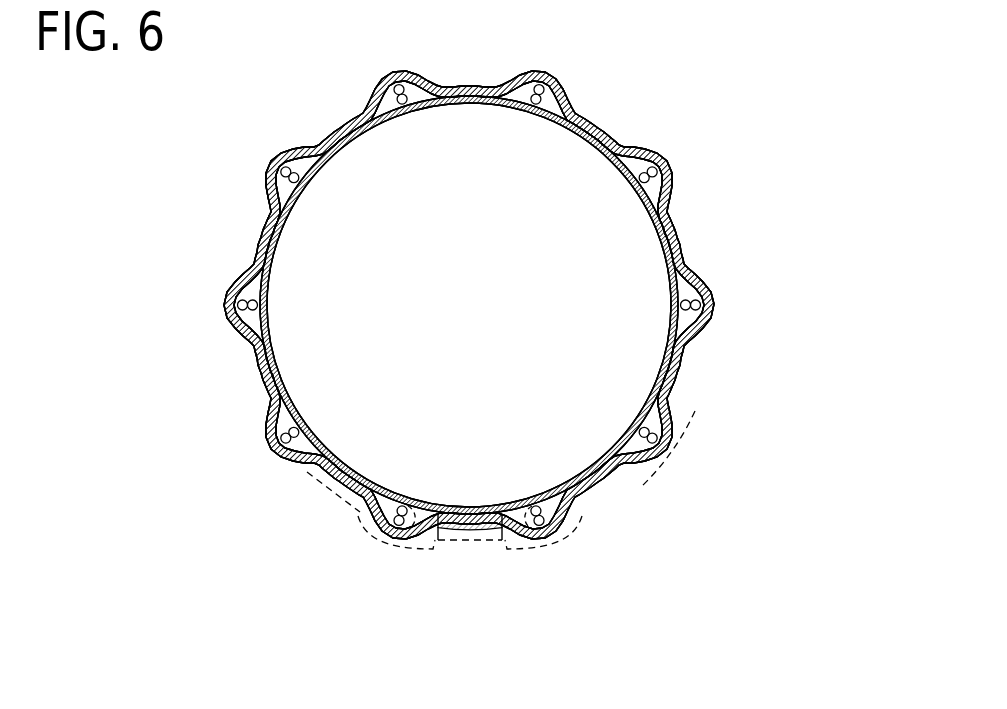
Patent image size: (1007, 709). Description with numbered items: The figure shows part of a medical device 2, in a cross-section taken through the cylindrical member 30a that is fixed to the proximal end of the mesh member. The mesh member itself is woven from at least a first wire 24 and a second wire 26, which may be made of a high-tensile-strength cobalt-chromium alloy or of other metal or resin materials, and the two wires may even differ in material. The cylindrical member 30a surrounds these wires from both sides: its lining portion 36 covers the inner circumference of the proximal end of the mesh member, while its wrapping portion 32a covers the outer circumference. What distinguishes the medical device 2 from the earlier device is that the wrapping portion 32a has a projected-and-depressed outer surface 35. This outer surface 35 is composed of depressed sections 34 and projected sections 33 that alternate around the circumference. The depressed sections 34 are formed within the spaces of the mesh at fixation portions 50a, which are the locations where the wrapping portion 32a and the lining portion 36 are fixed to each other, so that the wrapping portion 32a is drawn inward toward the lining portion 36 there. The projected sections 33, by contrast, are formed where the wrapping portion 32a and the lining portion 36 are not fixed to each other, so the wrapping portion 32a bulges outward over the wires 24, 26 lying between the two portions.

The medical device 2 is at (292, 95).
The first wire 24 is at (435, 87).
The second wire 26 is at (430, 103).
The cylindrical member 30a is at (738, 185).
The wrapping portion 32a is at (718, 307).
The projected sections 33 is at (653, 483).
The depressed sections 34 is at (586, 468).
The projected-and-depressed outer surface 35 is at (683, 375).
The lining portion 36 is at (553, 127).
The fixation portions 50a is at (273, 243).